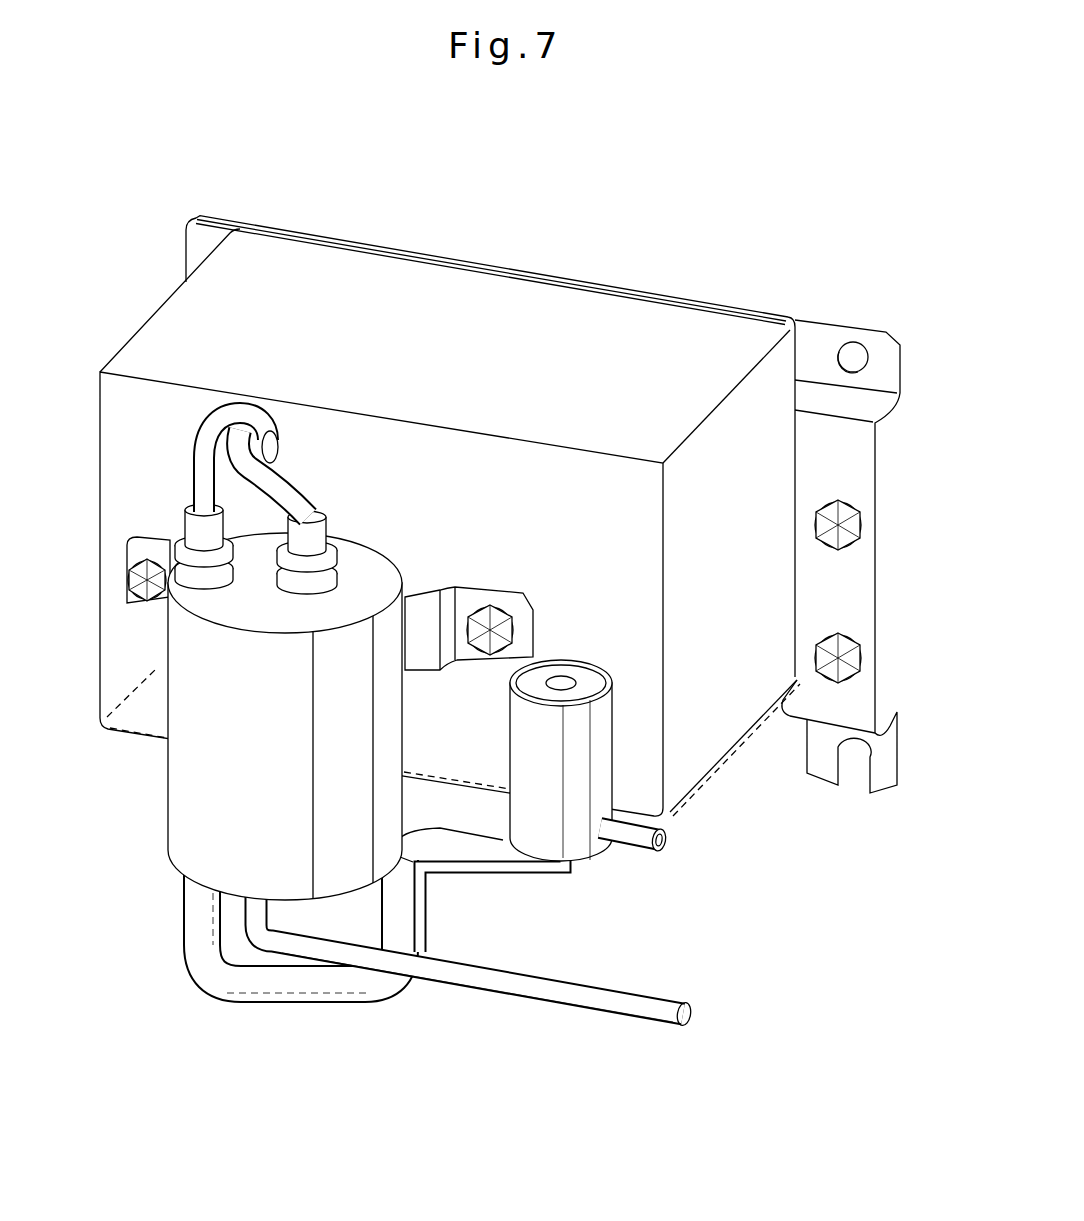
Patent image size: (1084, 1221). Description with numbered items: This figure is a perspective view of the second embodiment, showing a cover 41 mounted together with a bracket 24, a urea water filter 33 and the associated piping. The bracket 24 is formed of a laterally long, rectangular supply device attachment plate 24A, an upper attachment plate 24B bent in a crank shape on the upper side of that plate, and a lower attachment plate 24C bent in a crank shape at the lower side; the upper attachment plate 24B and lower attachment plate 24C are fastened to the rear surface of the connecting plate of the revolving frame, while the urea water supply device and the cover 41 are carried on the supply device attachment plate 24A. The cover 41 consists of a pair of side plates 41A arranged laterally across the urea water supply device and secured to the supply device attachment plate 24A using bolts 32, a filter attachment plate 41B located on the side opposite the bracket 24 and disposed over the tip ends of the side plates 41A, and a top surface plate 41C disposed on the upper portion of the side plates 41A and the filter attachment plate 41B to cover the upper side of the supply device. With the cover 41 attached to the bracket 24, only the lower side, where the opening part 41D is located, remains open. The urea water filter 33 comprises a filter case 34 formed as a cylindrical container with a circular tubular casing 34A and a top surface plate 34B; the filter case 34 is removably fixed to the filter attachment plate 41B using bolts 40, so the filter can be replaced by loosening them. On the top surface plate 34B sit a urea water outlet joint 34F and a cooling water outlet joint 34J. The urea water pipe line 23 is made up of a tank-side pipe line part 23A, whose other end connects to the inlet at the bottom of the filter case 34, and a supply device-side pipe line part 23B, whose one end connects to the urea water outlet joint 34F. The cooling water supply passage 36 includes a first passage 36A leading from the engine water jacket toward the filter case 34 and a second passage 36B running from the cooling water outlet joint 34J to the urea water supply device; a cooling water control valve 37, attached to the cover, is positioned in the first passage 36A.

The cover 41 is at (459, 533).
The side plate 41A is at (110, 670).
The filter attachment plate 41B is at (512, 480).
The top surface plate 41C is at (435, 320).
The opening part 41D is at (693, 747).
The bolt 40 is at (520, 605).
The bolt 32 is at (860, 527).
The bracket 24 is at (879, 551).
The supply device attachment plate 24A is at (835, 458).
The upper attachment plate 24B is at (860, 335).
The lower attachment plate 24C is at (880, 790).
The urea water filter 33 is at (372, 742).
The filter case 34 is at (281, 721).
The circular tubular casing 34A is at (210, 842).
The top surface plate 34B is at (365, 578).
The urea water outlet joint 34F is at (352, 547).
The cooling water outlet joint 34J is at (210, 560).
The cooling water supply passage 36 is at (301, 973).
The first passage 36A is at (333, 985).
The second passage 36B is at (190, 475).
The urea water pipe line 23 is at (474, 964).
The tank-side pipe line part 23A is at (548, 990).
The supply device-side pipe line part 23B is at (282, 485).
The cooling water control valve 37 is at (570, 845).